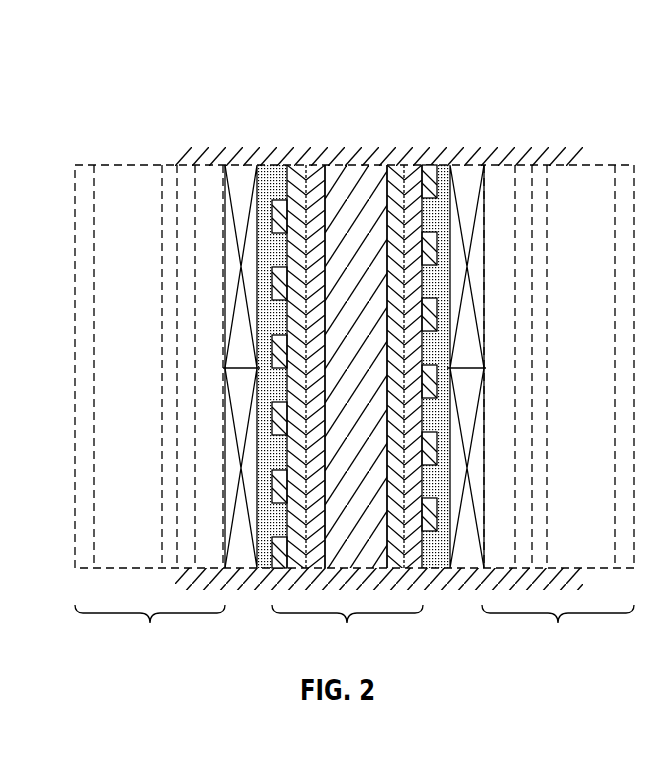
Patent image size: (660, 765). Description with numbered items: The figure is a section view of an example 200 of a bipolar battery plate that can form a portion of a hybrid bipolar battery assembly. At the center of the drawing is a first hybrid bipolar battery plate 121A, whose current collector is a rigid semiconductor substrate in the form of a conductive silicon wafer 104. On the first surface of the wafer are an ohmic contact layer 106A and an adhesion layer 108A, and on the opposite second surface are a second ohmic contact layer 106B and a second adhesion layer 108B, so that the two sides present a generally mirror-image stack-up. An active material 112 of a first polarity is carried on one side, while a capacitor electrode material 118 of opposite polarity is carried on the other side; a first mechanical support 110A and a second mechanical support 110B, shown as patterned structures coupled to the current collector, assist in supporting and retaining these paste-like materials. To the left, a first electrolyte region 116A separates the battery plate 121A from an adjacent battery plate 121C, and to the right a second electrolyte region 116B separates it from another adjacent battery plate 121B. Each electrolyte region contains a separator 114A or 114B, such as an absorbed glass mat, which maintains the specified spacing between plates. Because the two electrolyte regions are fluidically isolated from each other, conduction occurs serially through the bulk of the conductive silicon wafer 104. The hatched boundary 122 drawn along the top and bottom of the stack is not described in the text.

The hybrid bipolar battery assembly section 200 is at (142, 46).
The conductive silicon wafer 104 is at (372, 192).
The ohmic contact layer 106A is at (338, 172).
The second ohmic contact layer 106B is at (402, 178).
The adhesion layer 108A is at (275, 200).
The second adhesion layer 108B is at (430, 177).
The first mechanical support 110A is at (305, 190).
The second mechanical support 110B is at (423, 190).
The active material 112 is at (228, 178).
The separator 114A is at (262, 196).
The separator 114B is at (445, 200).
The first electrolyte region 116A is at (228, 258).
The second electrolyte region 116B is at (470, 262).
The capacitor electrode material 118 is at (482, 177).
The hatched boundary 122 is at (557, 163).
The first hybrid bipolar battery plate 121A is at (347, 631).
The adjacent battery plate 121B is at (558, 411).
The adjacent battery plate 121C is at (150, 411).